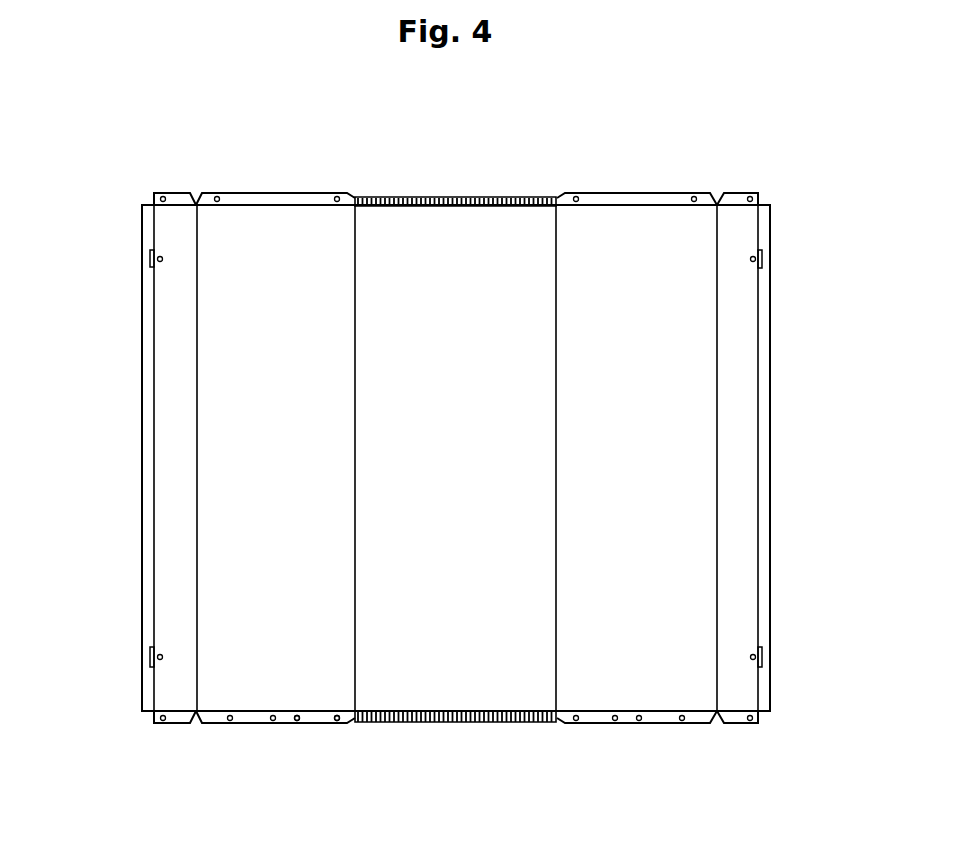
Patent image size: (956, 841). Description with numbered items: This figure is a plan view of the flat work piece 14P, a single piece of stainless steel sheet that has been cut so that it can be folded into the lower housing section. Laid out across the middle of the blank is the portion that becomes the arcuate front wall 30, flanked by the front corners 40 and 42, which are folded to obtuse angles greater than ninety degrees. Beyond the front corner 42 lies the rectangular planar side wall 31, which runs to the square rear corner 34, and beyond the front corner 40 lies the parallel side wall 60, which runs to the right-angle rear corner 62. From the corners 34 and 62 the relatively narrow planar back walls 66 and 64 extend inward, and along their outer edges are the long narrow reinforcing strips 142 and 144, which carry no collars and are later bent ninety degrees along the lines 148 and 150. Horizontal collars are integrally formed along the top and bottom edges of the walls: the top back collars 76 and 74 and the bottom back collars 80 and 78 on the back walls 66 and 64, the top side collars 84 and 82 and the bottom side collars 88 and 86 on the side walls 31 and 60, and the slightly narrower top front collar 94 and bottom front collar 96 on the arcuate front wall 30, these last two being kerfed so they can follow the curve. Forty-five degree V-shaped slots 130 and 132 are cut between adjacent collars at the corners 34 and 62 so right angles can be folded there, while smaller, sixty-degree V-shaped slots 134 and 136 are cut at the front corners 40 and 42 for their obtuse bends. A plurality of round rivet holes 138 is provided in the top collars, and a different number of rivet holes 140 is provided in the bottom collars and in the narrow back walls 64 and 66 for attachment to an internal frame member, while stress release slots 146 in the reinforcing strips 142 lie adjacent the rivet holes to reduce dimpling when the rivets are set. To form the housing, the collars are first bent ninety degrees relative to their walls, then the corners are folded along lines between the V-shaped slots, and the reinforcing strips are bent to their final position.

The work piece 14P is at (370, 167).
The arcuate front wall 30 is at (415, 228).
The side wall 31 is at (257, 222).
The rear corner 34 is at (195, 482).
The front corner 40 is at (556, 232).
The front corner 42 is at (352, 245).
The side wall 60 is at (628, 226).
The rear corner 62 is at (718, 483).
The back wall 64 is at (736, 368).
The back wall 66 is at (168, 355).
The top back collar 74 is at (737, 201).
The top back collar 76 is at (175, 201).
The bottom back collar 78 is at (732, 723).
The bottom back collar 80 is at (176, 723).
The top side collar 82 is at (587, 201).
The top side collar 84 is at (228, 202).
The bottom side collar 86 is at (592, 723).
The bottom side collar 88 is at (248, 723).
The top front collar 94 is at (470, 197).
The bottom front collar 96 is at (493, 722).
The V-shaped slot 130 is at (717, 723).
The V-shaped slot 132 is at (196, 724).
The V-shaped slot 134 is at (556, 723).
The V-shaped slot 136 is at (351, 722).
The rivet holes 138 is at (333, 723).
The rivet holes 140 is at (756, 247).
The reinforcing strip 142 is at (150, 434).
The reinforcing strip 144 is at (763, 515).
The stress release slots 146 is at (763, 257).
The bend line 148 is at (152, 310).
The bend line 150 is at (759, 317).